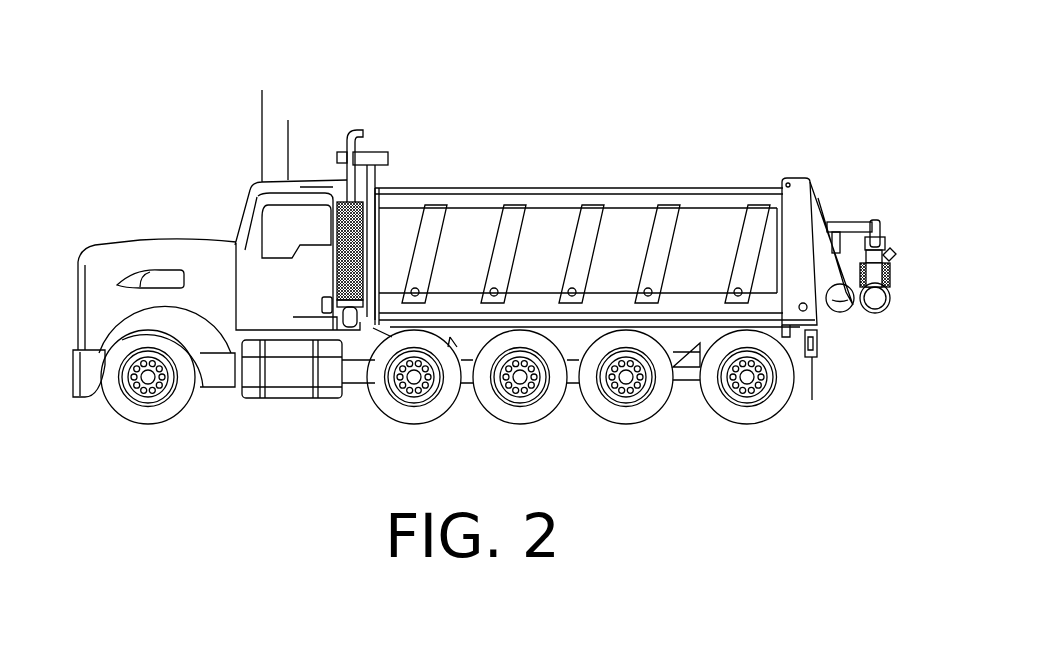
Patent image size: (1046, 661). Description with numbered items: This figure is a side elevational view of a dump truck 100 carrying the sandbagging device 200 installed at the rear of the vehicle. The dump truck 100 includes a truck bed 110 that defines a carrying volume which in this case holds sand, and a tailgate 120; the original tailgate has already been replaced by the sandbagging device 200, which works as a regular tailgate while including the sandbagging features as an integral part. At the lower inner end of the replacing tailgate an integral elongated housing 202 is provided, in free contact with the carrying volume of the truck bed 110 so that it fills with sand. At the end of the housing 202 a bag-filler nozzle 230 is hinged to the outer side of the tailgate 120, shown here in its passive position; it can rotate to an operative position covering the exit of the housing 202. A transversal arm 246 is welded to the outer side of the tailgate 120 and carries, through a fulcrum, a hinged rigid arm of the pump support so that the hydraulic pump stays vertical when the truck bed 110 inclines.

The dump truck 100 is at (170, 113).
The truck bed 110 is at (527, 188).
The tailgate 120 is at (825, 213).
The sandbagging device 200 is at (845, 313).
The elongated housing 202 is at (840, 298).
The bag-filler nozzle 230 is at (878, 302).
The transversal arm 246 is at (849, 226).